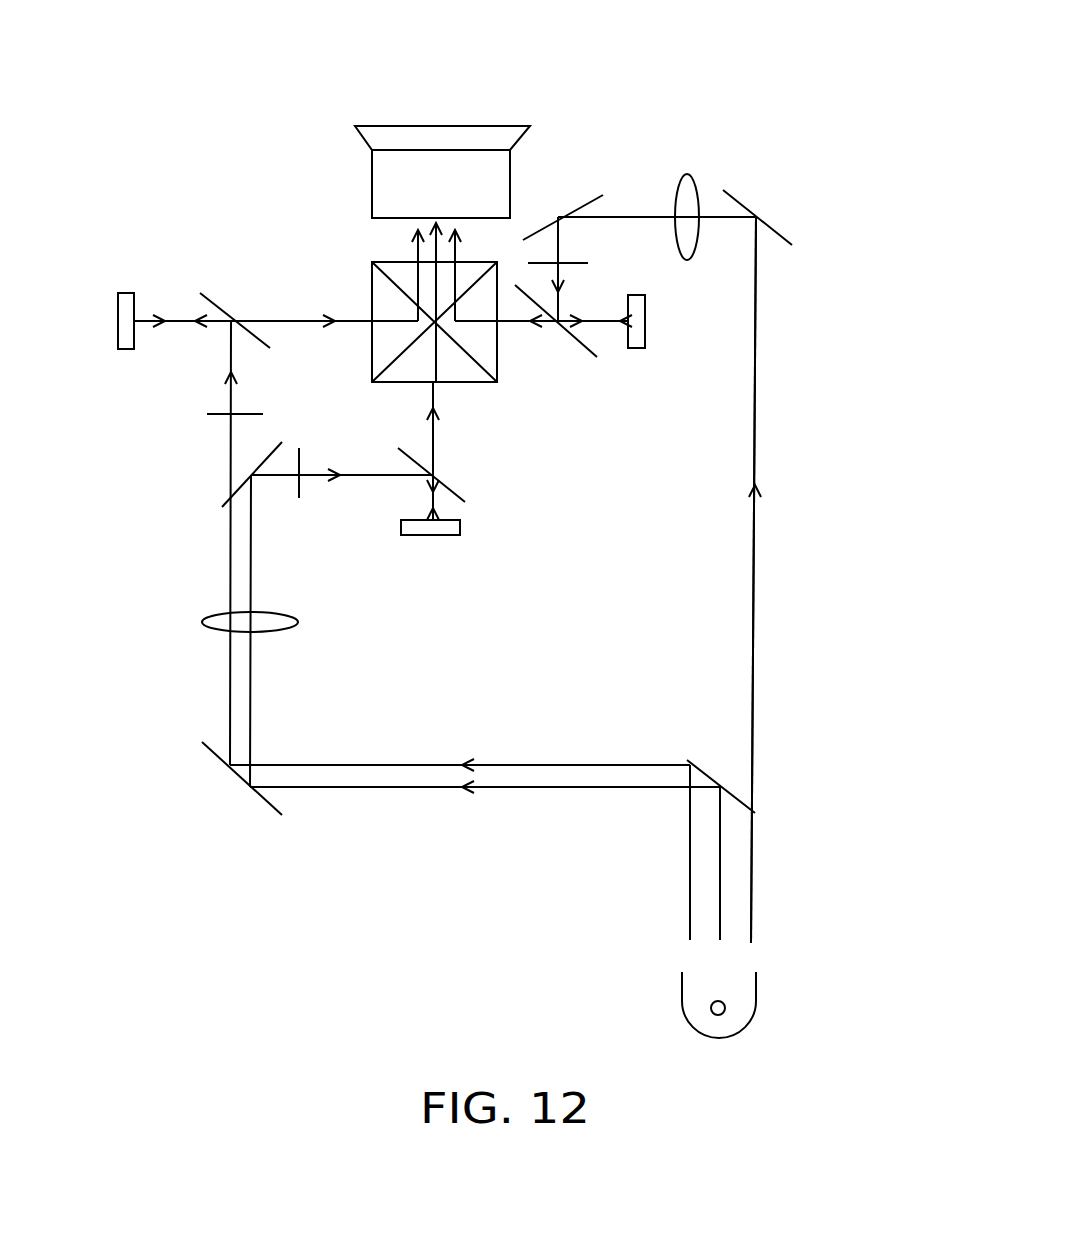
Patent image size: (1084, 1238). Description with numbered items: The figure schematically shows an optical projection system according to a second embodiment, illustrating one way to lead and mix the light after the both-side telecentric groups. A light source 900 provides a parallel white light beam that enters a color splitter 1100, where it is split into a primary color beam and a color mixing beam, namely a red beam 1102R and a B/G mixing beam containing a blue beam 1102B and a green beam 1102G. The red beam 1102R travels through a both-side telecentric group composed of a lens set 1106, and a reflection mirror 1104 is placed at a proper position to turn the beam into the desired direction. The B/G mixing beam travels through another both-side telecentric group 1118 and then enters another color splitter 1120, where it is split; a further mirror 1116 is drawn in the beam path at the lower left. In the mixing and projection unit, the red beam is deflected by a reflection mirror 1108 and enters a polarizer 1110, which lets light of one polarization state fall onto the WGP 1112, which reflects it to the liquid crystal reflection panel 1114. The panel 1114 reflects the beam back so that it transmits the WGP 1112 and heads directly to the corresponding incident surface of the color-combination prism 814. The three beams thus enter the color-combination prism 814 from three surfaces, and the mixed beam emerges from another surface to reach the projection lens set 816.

The projection lens set 816 is at (473, 125).
The color-combination prism 814 is at (368, 283).
The reflection mirror 1108 is at (558, 207).
The lens set 1106 is at (680, 178).
The reflection mirror 1104 is at (757, 215).
The polarizer 1110 is at (563, 267).
The WGP (wire grid polarizer) 1112 is at (218, 294).
The liquid crystal reflection panel 1114 is at (125, 350).
The color splitter 1120 is at (235, 493).
The both-side telecentric group 1118 is at (202, 620).
The mirror 1116 is at (255, 805).
The blue beam 1102B is at (513, 762).
The green beam 1102G is at (540, 790).
The red beam 1102R is at (750, 690).
The color splitter 1100 is at (752, 810).
The light source 900 is at (757, 1005).